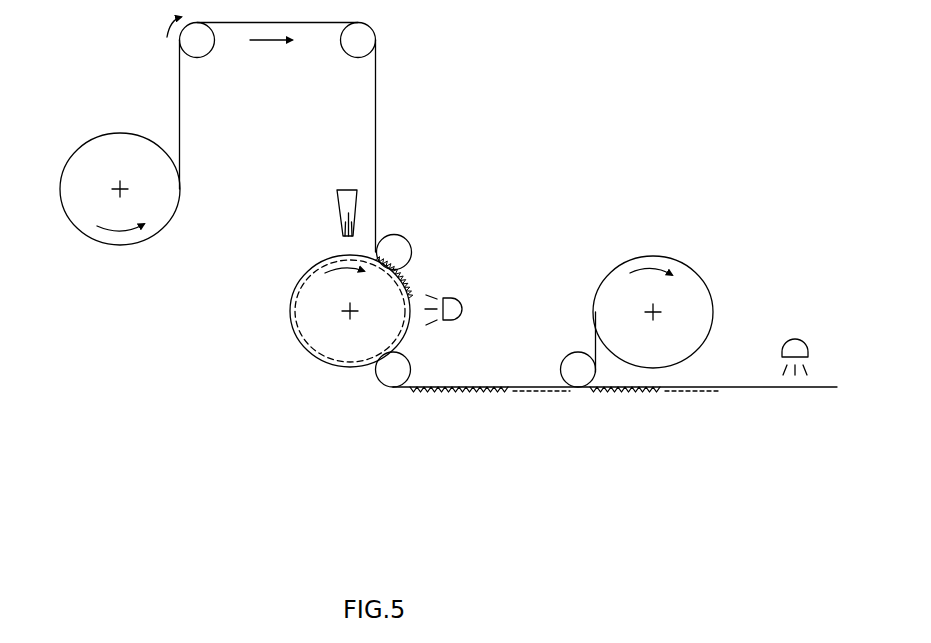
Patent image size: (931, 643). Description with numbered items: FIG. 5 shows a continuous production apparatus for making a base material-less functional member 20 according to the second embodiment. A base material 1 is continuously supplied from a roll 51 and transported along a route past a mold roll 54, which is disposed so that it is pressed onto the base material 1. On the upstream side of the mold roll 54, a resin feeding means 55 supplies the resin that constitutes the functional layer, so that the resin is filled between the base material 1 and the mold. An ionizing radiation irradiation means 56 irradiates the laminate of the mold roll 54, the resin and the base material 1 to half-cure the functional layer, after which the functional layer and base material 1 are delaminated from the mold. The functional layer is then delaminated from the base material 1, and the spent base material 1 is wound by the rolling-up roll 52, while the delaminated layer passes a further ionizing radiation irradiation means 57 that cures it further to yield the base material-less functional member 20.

The base material 1 is at (502, 202).
The roll 51 is at (108, 189).
The rolling-up roll 52 is at (650, 304).
The mold roll 54 is at (339, 309).
The resin feeding means 55 is at (333, 198).
The ionizing radiation irradiation means 56 is at (460, 302).
The ionizing radiation irradiation means 57 is at (795, 340).
The base material-less functional member 20 is at (565, 409).